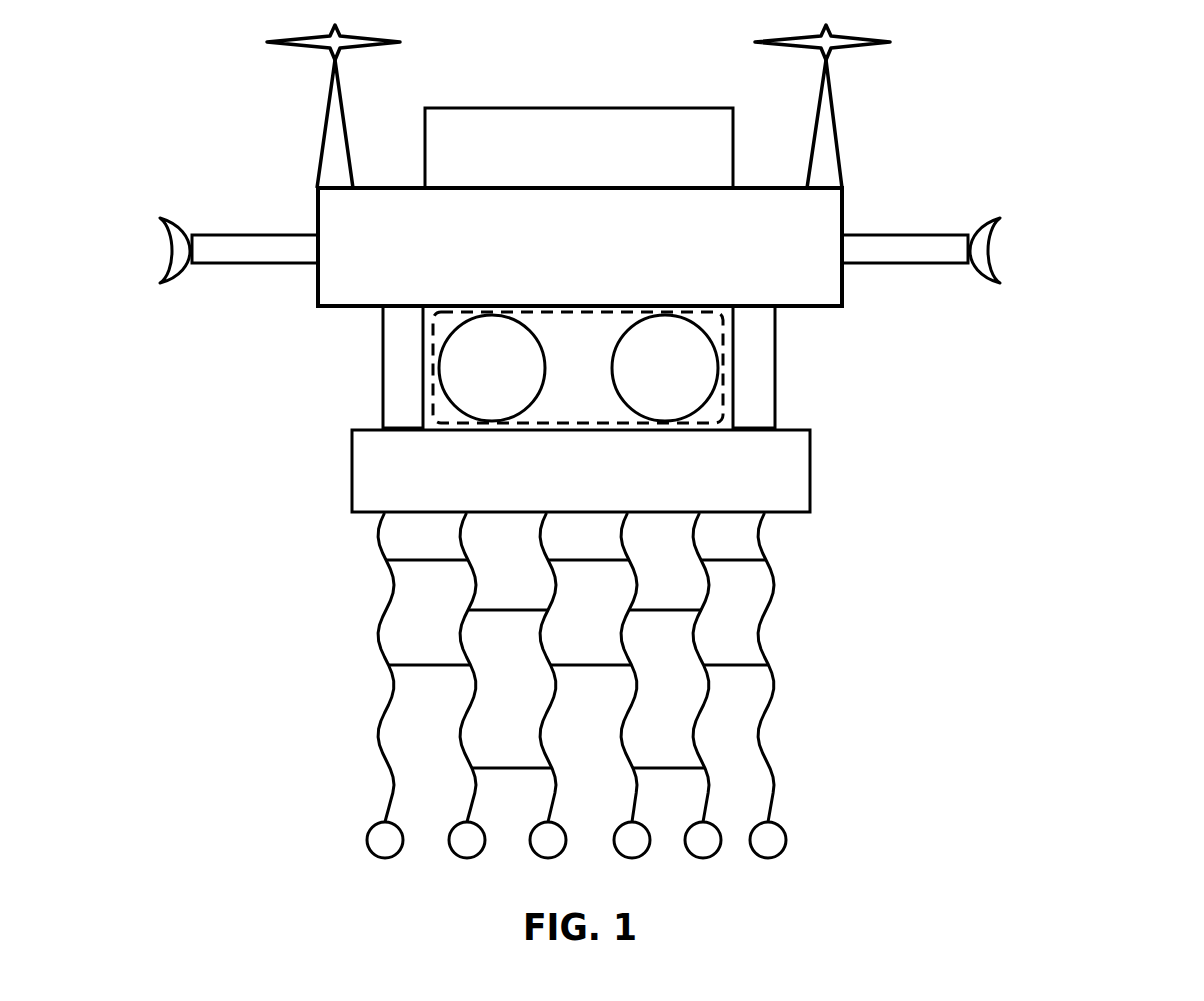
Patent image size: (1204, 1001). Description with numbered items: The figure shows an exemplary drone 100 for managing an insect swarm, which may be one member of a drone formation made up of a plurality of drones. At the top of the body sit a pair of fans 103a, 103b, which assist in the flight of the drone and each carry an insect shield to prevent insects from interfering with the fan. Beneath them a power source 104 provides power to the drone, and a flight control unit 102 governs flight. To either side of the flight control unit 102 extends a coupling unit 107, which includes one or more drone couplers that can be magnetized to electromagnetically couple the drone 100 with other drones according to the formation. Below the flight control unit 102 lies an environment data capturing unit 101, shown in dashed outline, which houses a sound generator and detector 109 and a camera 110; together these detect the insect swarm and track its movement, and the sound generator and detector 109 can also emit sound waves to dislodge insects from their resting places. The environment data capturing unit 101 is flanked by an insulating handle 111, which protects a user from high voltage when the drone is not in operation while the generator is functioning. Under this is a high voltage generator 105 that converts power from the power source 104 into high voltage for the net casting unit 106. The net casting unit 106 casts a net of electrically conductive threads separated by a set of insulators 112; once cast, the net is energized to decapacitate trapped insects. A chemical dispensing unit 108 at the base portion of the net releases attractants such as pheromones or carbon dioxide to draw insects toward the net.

The drone 100 is at (1082, 80).
The environment data capturing unit 101 is at (432, 388).
The flight control unit 102 is at (705, 259).
The fan 103a is at (890, 42).
The fan 103b is at (270, 42).
The power source 104 is at (683, 166).
The high voltage generator 105 is at (737, 481).
The net casting unit 106 is at (773, 773).
The coupling unit 107 is at (1003, 255).
The chemical dispensing unit 108 is at (786, 840).
The sound generator and detector 109 is at (492, 368).
The camera 110 is at (665, 368).
The insulating handle 111 is at (777, 388).
The insulators 112 is at (735, 662).